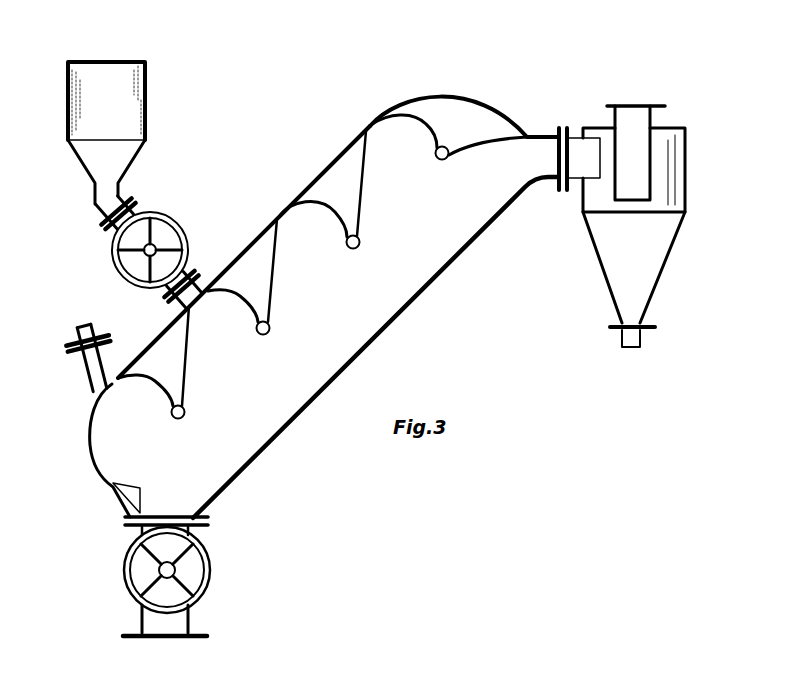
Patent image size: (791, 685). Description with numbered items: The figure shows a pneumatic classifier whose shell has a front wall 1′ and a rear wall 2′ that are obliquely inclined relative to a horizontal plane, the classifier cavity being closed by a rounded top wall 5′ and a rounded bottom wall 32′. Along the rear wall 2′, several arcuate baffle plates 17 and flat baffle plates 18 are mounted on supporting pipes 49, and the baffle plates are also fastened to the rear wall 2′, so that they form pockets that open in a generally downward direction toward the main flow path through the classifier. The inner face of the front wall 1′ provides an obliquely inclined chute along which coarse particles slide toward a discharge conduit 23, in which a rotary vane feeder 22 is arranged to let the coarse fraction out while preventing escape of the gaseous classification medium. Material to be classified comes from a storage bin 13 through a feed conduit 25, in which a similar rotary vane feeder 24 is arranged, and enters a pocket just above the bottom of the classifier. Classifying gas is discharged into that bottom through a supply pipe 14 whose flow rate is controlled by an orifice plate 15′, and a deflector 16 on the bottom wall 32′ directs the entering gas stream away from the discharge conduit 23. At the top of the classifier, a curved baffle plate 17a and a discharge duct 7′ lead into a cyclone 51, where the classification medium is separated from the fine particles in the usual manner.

The storage bin 13 is at (117, 102).
The rotary vane feeder 24 is at (177, 223).
The feed conduit 25 is at (113, 265).
The arcuate baffle plates 17 is at (150, 379).
The rear wall 2′ is at (173, 305).
The flat baffle plates 18 is at (186, 340).
The supporting pipes 49 is at (179, 419).
The curved baffle plate 17a is at (475, 140).
The top wall 5′ is at (508, 116).
The discharge duct 7′ is at (540, 158).
The cyclone 51 is at (620, 277).
The front wall 1′ is at (405, 307).
The orifice plate 15′ is at (72, 356).
The supply pipe 14 is at (100, 383).
The bottom wall 32′ is at (90, 452).
The deflector 16 is at (127, 500).
The rotary vane feeder 22 is at (125, 558).
The discharge conduit 23 is at (125, 592).